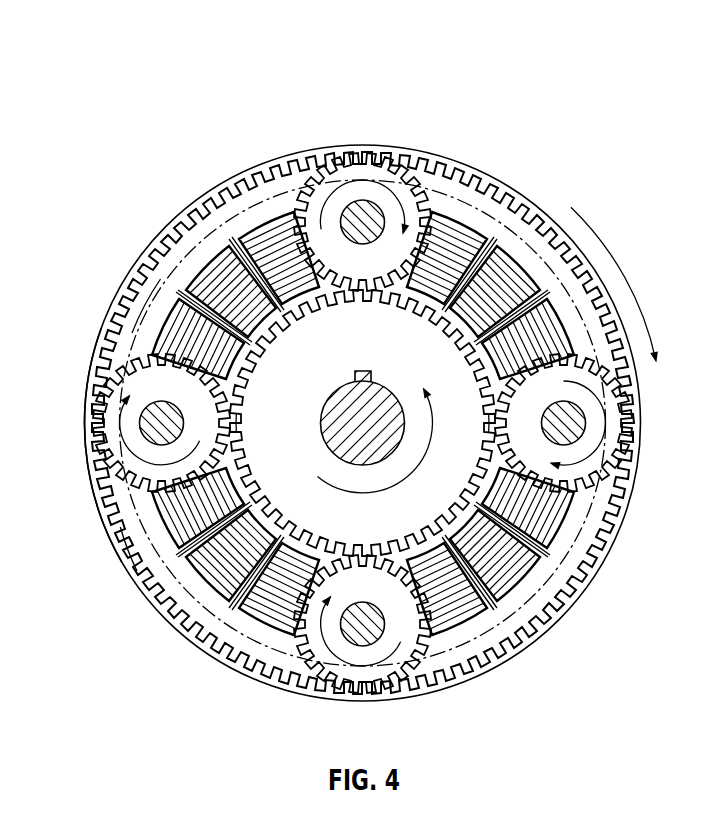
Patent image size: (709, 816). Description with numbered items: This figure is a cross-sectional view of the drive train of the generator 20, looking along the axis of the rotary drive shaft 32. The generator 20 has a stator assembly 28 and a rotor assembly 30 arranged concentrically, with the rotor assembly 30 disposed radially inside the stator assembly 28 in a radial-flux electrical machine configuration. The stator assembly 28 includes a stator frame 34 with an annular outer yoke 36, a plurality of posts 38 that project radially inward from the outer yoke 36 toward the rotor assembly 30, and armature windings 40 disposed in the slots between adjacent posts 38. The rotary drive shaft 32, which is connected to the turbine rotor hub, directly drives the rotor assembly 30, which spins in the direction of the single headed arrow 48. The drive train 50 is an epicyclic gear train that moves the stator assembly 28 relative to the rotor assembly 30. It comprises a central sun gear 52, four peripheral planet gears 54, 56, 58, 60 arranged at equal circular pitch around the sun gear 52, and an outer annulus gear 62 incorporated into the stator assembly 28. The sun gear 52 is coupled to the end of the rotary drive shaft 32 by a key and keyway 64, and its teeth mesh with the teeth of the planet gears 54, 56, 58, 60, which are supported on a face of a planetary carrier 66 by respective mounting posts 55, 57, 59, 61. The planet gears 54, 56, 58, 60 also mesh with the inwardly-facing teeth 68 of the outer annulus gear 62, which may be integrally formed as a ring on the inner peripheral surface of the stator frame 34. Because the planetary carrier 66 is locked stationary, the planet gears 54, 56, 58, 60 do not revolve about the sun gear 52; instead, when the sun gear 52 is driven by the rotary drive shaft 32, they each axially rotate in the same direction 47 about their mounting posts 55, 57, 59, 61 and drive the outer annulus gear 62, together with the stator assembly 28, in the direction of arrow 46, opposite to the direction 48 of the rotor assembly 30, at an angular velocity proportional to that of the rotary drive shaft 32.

The generator 20 is at (132, 97).
The stator assembly 28 is at (232, 185).
The rotor assembly 30 is at (217, 246).
The rotary drive shaft 32 is at (394, 388).
The stator frame 34 is at (492, 242).
The annular outer yoke 36 is at (180, 306).
The posts 38 is at (228, 322).
The armature windings 40 is at (441, 547).
The direction of stator rotation (arrow) 46 is at (609, 248).
The direction of planet gear rotation 47 is at (396, 184).
The direction of rotor rotation (arrow) 48 is at (350, 491).
The drive train 50 is at (152, 248).
The sun gear 52 is at (283, 465).
The planet gear 54 is at (362, 166).
The mounting post 55 is at (368, 244).
The planet gear 56 is at (113, 424).
The mounting post 57 is at (232, 425).
The planet gear 58 is at (363, 684).
The mounting post 59 is at (362, 601).
The planet gear 60 is at (617, 423).
The mounting post 61 is at (488, 422).
The outer annulus gear 62 is at (96, 372).
The keyway 64 is at (367, 372).
The planetary carrier 66 is at (451, 195).
The inwardly-facing teeth 68 is at (118, 552).